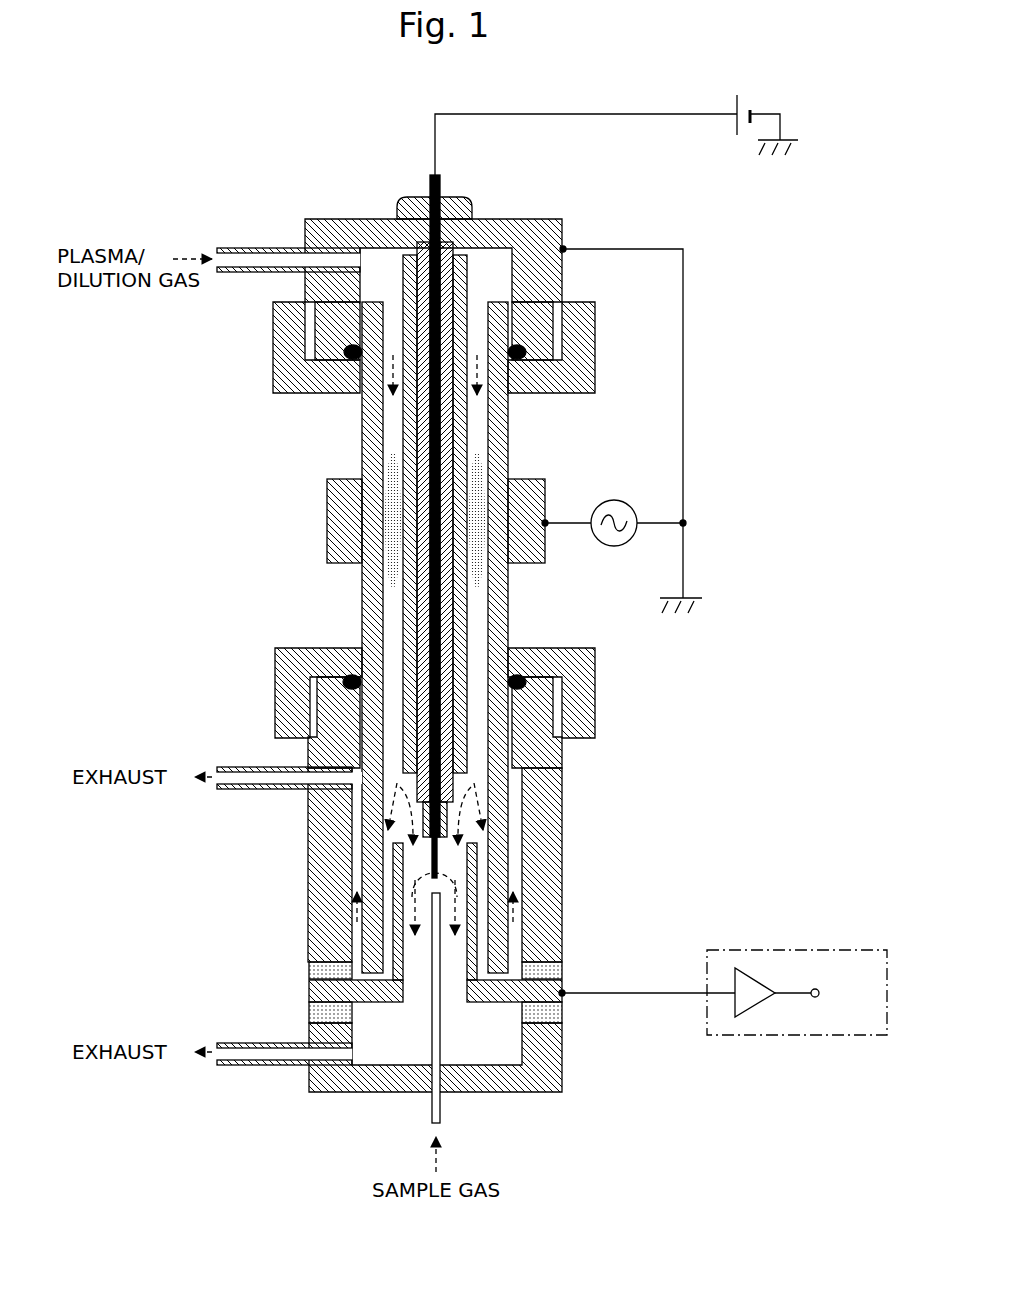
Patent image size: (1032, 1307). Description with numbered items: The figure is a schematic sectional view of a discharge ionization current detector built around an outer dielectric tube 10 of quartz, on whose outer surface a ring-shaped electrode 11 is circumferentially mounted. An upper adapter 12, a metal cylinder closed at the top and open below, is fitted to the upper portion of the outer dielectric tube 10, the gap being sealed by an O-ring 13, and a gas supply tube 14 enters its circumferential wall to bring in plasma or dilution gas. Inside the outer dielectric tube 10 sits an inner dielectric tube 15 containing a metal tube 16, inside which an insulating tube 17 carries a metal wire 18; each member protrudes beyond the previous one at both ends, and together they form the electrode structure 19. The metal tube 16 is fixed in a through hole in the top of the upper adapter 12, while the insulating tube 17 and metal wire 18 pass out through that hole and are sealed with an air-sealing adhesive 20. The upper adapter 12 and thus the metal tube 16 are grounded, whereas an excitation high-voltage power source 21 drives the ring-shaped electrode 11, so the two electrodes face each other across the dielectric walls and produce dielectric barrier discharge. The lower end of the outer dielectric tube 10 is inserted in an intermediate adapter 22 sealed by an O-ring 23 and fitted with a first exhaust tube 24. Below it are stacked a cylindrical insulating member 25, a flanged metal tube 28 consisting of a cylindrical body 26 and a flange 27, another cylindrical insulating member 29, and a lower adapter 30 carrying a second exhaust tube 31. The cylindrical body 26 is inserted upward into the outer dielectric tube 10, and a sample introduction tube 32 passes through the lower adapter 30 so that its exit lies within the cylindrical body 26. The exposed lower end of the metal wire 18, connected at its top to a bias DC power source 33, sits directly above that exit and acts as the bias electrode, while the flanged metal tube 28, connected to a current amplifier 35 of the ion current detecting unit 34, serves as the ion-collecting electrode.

The outer dielectric tube 10 is at (362, 433).
The ring-shaped electrode 11 is at (327, 522).
The upper adapter 12 is at (540, 218).
The O-ring 13 is at (520, 360).
The gas supply tube 14 is at (253, 248).
The inner dielectric tube 15 is at (462, 756).
The metal tube 16 is at (450, 796).
The insulating tube 17 is at (443, 833).
The metal wire 18 is at (437, 862).
The electrode structure 19 is at (648, 747).
The air-sealing adhesive 20 is at (455, 197).
The excitation high-voltage power source 21 is at (625, 502).
The intermediate adapter 22 is at (562, 928).
The O-ring 23 is at (520, 672).
The first exhaust tube 24 is at (262, 790).
The cylindrical insulating member 25 is at (562, 972).
The cylindrical body 26 is at (393, 940).
The flange 27 is at (309, 990).
The flanged metal tube 28 is at (230, 930).
The cylindrical insulating member 29 is at (562, 1016).
The lower adapter 30 is at (562, 1078).
The second exhaust tube 31 is at (262, 1066).
The sample introduction tube 32 is at (431, 1050).
The bias DC power source 33 is at (728, 128).
The ion current detecting unit 34 is at (832, 1035).
The current amplifier 35 is at (741, 1013).